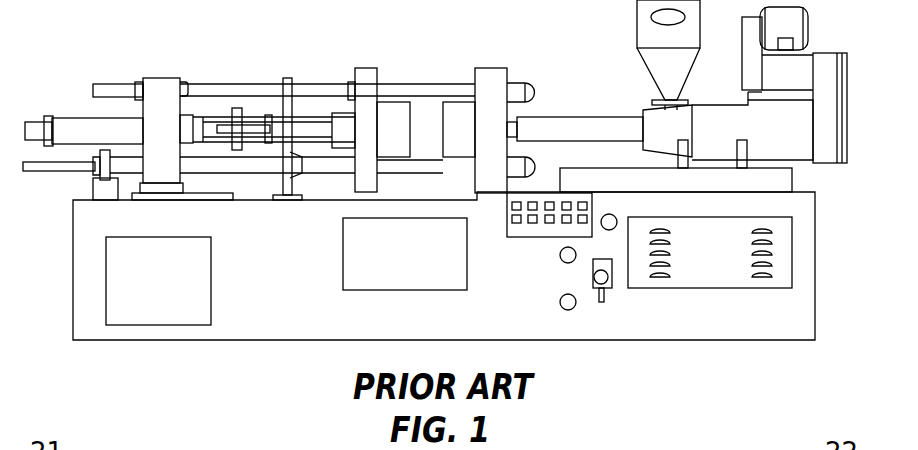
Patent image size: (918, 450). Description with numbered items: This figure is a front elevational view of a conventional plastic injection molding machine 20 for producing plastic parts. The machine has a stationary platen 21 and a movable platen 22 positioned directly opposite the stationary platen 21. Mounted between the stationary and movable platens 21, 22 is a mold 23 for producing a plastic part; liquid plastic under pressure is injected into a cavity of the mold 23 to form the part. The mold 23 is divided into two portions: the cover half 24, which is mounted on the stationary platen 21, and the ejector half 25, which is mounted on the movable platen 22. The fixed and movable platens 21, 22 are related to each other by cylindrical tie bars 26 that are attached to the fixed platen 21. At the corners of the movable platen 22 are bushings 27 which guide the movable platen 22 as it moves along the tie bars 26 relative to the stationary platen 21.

The injection molding machine 20 is at (307, 342).
The stationary platen 21 is at (487, 68).
The movable platen 22 is at (366, 68).
The mold 23 is at (416, 155).
The cover half 24 is at (465, 132).
The ejector half 25 is at (383, 132).
The tie bars 26 is at (405, 83).
The bushings 27 is at (350, 82).